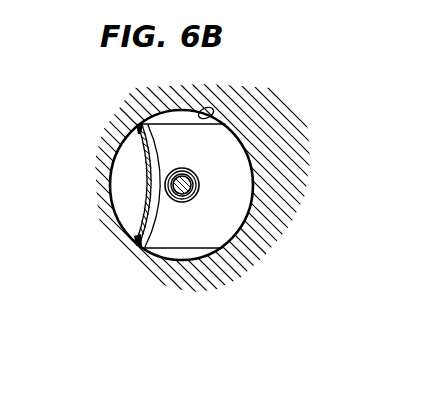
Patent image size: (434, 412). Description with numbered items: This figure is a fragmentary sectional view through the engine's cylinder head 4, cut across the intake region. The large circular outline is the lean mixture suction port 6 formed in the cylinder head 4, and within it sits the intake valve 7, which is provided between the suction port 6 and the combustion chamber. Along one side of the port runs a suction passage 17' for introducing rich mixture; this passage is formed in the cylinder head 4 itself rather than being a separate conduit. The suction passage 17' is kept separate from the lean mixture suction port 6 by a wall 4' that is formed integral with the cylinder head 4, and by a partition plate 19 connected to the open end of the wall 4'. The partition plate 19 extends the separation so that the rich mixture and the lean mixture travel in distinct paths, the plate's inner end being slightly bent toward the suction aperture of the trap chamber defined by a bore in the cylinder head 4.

The cylinder head 4 is at (217, 190).
The wall 4' is at (182, 215).
The suction port 6 is at (204, 108).
The intake valve 7 is at (198, 184).
The suction passage 17' is at (106, 185).
The partition plate 19 is at (140, 124).